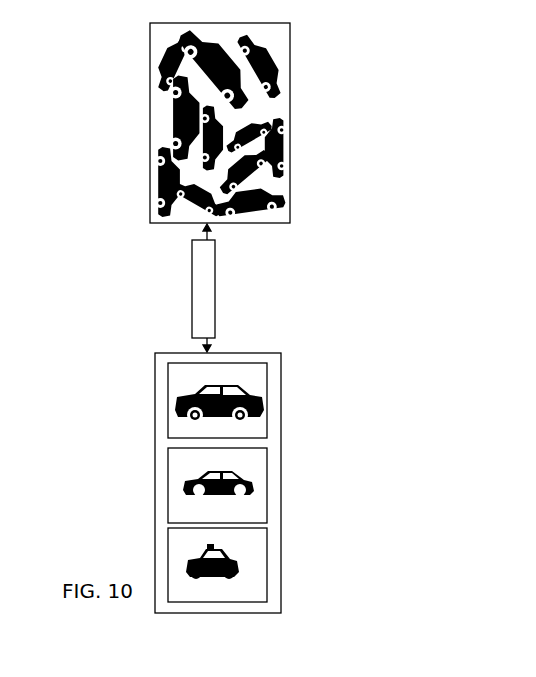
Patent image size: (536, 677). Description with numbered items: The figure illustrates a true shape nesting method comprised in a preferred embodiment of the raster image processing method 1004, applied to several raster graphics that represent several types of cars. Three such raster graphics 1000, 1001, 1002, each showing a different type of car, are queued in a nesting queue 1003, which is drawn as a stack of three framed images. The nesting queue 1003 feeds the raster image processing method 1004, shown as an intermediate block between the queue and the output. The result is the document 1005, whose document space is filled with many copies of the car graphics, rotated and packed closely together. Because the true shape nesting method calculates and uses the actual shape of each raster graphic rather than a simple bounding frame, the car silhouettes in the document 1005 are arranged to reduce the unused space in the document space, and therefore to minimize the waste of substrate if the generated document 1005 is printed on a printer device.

The raster graphic 1000 is at (268, 551).
The raster graphic 1001 is at (268, 483).
The raster graphic 1002 is at (268, 403).
The nesting queue 1003 is at (155, 543).
The raster image processing method 1004 is at (215, 312).
The document 1005 is at (290, 178).